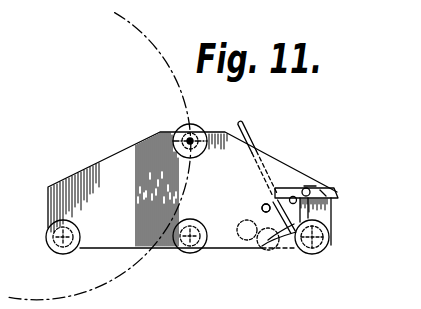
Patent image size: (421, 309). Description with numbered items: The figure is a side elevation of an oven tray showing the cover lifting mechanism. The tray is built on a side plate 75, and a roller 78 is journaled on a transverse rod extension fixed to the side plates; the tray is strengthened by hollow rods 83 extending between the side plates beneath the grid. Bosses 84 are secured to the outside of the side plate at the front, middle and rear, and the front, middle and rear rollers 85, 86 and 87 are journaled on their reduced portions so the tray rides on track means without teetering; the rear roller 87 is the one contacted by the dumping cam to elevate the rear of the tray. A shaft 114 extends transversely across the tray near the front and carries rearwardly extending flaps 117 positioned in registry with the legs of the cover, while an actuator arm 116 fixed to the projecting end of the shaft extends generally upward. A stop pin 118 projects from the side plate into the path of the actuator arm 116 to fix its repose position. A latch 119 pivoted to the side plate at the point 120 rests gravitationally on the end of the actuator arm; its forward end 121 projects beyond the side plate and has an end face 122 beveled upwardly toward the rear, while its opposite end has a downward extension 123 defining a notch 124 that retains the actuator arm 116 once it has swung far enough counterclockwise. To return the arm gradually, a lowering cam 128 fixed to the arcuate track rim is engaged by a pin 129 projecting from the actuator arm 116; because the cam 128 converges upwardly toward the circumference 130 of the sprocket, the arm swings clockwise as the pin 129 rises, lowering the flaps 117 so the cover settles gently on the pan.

The side plate 75 is at (113, 156).
The roller 78 is at (197, 129).
The hollow rod 83 is at (121, 234).
The boss 84 is at (47, 228).
The front roller 85 is at (64, 254).
The middle roller 86 is at (188, 255).
The rear roller 87 is at (325, 249).
The shaft 114 is at (281, 252).
The actuator arm 116 is at (332, 222).
The flap 117 is at (263, 252).
The stop pin 118 is at (262, 204).
The latch 119 is at (309, 188).
The pivot point 120 is at (310, 185).
The forward end of latch 121 is at (325, 187).
The end face 122 is at (338, 189).
The downward extension 123 is at (268, 188).
The notch 124 is at (293, 196).
The lowering cam 128 is at (247, 130).
The pin 129 is at (329, 204).
The circumference of sprocket 130 is at (183, 99).